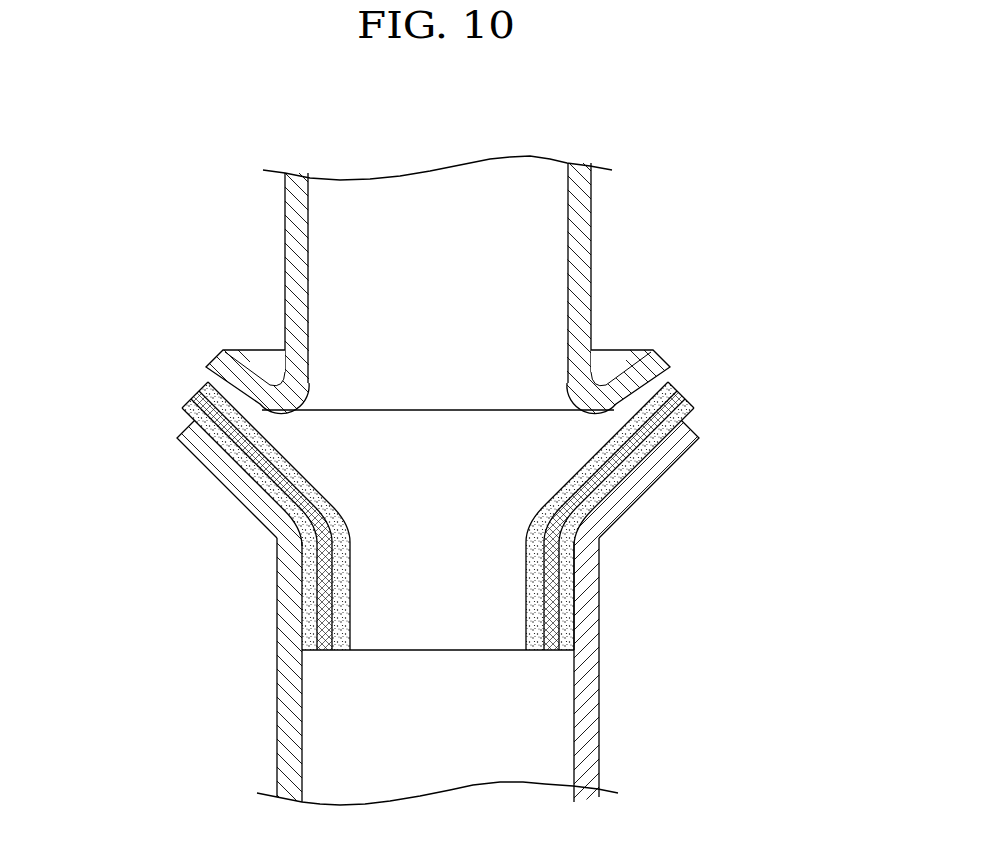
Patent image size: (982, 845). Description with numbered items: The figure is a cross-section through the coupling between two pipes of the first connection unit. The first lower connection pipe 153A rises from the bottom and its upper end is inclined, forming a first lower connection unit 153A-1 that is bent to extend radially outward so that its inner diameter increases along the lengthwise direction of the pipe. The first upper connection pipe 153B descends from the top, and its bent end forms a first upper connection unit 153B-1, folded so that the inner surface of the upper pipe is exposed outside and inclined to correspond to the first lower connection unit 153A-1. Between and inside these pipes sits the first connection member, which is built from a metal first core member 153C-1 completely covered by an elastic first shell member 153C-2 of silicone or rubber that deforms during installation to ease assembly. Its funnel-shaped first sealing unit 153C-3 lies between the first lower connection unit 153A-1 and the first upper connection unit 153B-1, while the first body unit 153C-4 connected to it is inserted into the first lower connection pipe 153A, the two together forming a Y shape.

The first lower connection pipe 153A is at (288, 700).
The first lower connection unit 153A-1 is at (219, 480).
The first upper connection pipe 153B is at (590, 238).
The first upper connection unit 153B-1 is at (632, 372).
The first core member 153C-1 is at (207, 393).
The first shell member 153C-2 is at (188, 403).
The first sealing unit 153C-3 is at (660, 453).
The first body unit 153C-4 is at (582, 597).